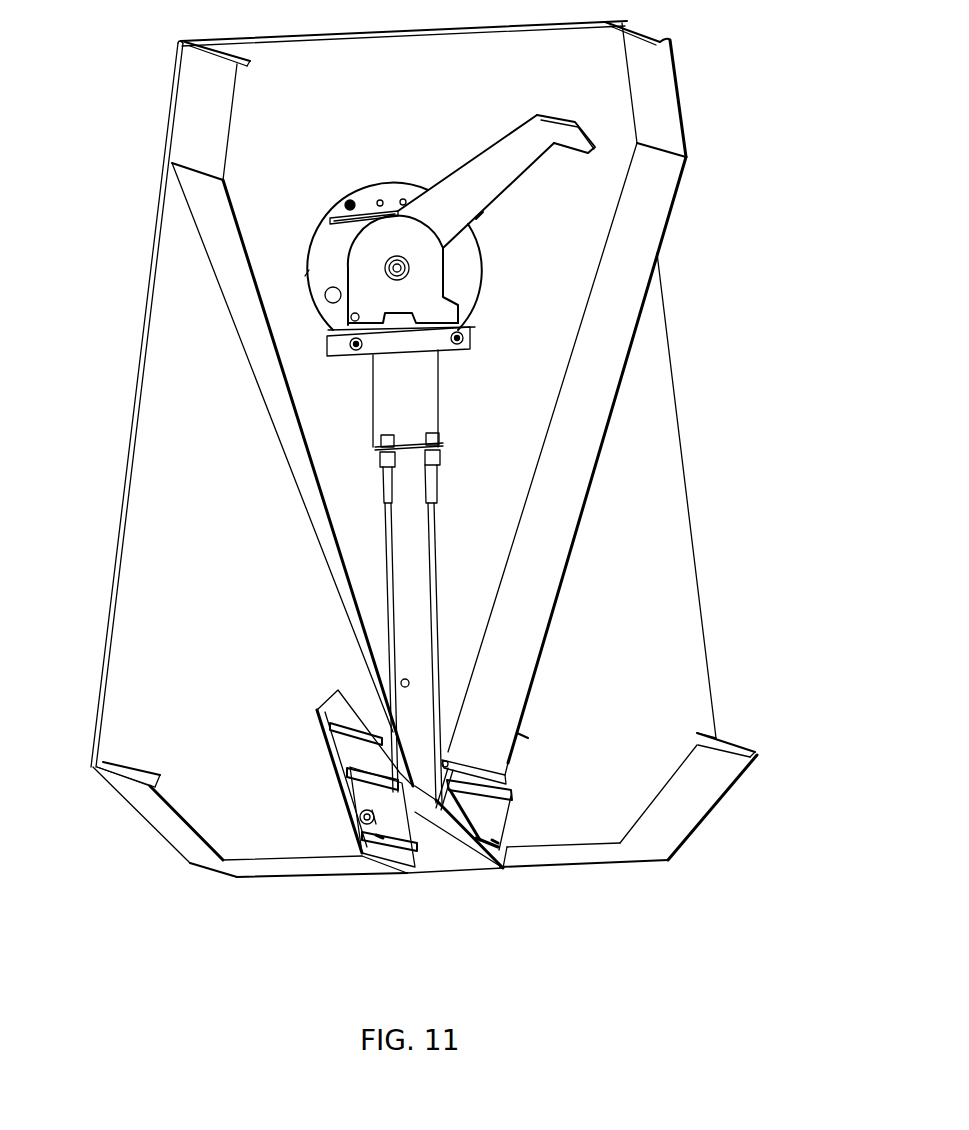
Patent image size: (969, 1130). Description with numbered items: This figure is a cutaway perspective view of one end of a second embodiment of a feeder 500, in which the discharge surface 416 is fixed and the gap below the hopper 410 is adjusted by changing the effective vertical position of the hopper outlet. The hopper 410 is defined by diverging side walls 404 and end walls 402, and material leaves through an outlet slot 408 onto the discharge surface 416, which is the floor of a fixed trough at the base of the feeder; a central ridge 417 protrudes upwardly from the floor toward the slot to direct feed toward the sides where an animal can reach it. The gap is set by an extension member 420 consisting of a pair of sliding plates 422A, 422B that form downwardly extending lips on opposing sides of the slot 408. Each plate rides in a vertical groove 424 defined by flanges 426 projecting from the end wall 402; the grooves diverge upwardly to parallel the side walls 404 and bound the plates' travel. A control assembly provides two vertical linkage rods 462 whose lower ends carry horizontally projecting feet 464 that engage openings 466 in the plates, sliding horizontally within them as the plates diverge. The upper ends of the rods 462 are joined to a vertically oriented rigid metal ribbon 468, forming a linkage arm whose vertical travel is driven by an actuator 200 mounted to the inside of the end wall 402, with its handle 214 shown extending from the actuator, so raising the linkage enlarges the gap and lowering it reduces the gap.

The feeder 500 is at (104, 146).
The end wall 402 is at (320, 109).
The actuator 200 is at (405, 182).
The winch handle 214 is at (517, 157).
The hopper 410 is at (672, 207).
The side wall 404 is at (623, 290).
The rigid metal ribbon 468 is at (417, 392).
The linkage rods 462 is at (388, 598).
The vertical groove 424 is at (327, 708).
The flange 426 is at (317, 725).
The sliding plate 422A is at (365, 797).
The sliding plate 422B is at (497, 813).
The foot 464 is at (360, 818).
The opening 466 is at (380, 840).
The outlet slot 408 is at (430, 813).
The discharge surface 416 is at (265, 867).
The extension member 420 is at (471, 816).
The central ridge 417 is at (470, 850).